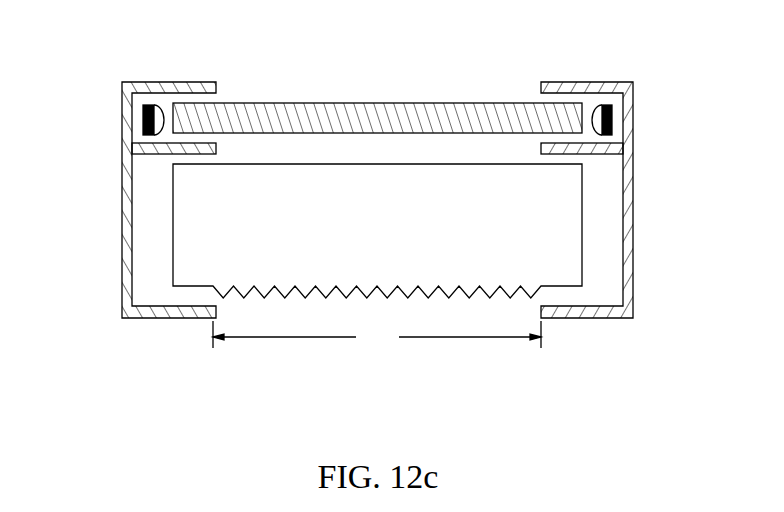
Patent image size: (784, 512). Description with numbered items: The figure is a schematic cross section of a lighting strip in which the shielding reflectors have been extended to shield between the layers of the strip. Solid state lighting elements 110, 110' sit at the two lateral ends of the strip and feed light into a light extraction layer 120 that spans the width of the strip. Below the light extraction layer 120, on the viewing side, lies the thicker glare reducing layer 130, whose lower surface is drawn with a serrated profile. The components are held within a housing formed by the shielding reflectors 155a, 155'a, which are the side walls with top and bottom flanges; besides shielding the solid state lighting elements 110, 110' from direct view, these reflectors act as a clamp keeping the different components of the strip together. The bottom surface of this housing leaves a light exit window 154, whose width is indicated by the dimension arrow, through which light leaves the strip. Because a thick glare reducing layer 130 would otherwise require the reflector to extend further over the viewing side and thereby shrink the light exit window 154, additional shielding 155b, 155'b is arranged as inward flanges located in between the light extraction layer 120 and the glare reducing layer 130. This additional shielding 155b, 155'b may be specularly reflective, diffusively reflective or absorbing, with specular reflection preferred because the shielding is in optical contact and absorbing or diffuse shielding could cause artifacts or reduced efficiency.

The solid state lighting element 110 is at (95, 120).
The solid state lighting element 110' is at (661, 120).
The light extraction layer 120 is at (303, 115).
The glare reducing layer 130 is at (413, 195).
The light exit window 154 is at (377, 334).
The shielding reflector 155a is at (122, 200).
The additional shielding 155b is at (134, 156).
The shielding reflector 155'a is at (634, 200).
The additional shielding 155'b is at (618, 163).